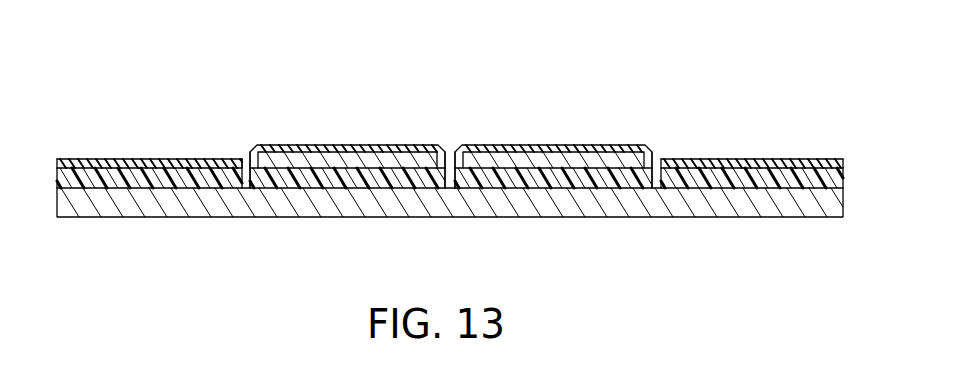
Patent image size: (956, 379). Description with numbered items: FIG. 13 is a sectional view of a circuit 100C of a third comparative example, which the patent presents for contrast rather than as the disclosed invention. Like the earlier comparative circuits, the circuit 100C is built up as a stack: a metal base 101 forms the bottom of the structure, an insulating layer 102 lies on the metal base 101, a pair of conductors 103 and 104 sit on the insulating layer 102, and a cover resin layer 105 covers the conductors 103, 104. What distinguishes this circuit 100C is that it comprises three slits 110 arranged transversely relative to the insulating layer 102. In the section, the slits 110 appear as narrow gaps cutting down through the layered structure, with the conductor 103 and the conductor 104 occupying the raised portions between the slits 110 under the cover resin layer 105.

The circuit 100C is at (627, 78).
The metal base 101 is at (405, 208).
The insulating layer 102 is at (578, 182).
The conductor 103 is at (349, 160).
The conductor 104 is at (545, 160).
The cover resin layer 105 is at (404, 147).
The slit 110 is at (245, 148).